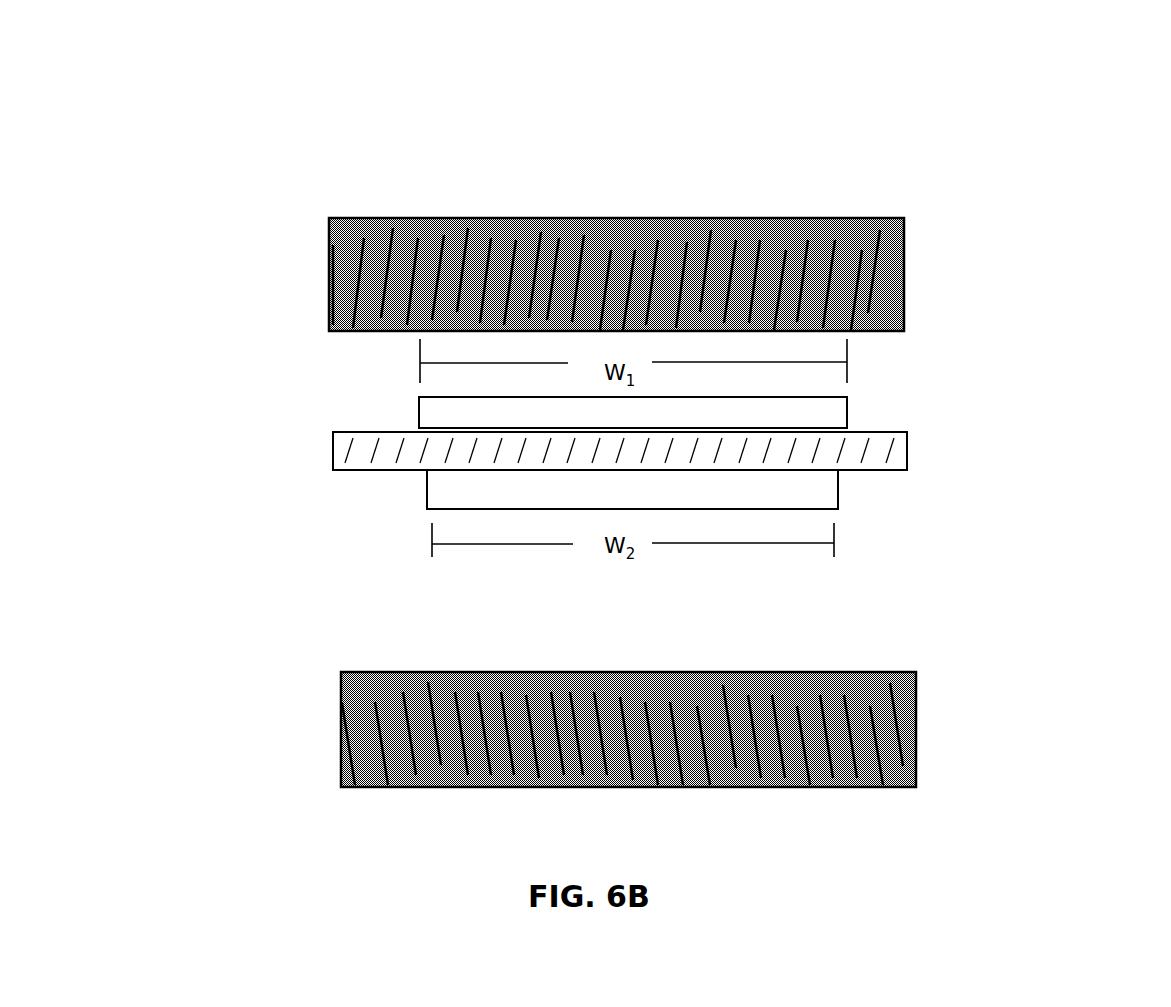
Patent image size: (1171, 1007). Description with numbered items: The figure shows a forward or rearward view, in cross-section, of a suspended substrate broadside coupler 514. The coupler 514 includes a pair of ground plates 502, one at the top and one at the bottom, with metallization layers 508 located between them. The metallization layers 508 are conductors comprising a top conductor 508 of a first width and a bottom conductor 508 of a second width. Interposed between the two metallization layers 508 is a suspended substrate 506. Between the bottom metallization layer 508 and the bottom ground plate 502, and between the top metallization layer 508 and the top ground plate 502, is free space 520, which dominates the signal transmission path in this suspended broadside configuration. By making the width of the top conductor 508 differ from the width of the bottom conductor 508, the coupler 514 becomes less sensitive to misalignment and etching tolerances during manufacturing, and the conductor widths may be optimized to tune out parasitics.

The ground plate 502 is at (928, 270).
The suspended substrate 506 is at (922, 455).
The metallization layer 508 is at (872, 409).
The suspended substrate broadside coupler 514 is at (543, 140).
The free space 520 is at (372, 379).